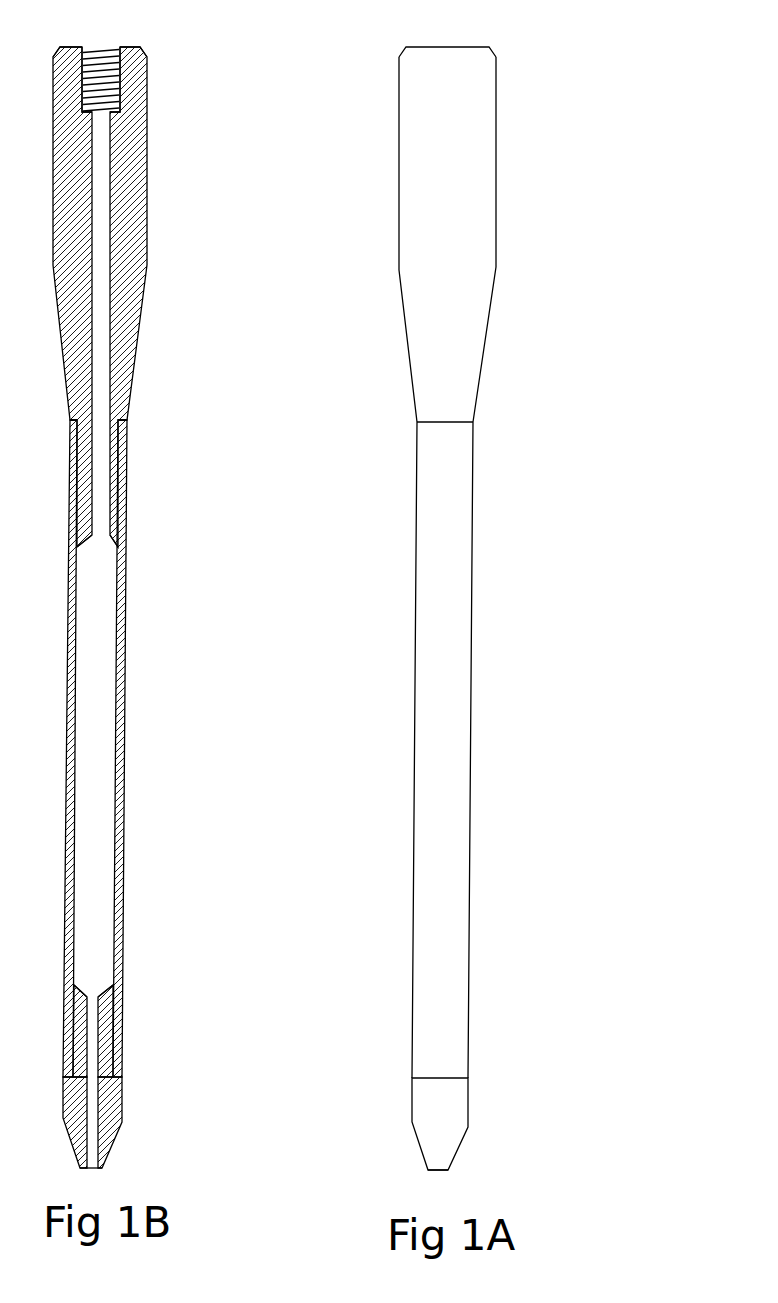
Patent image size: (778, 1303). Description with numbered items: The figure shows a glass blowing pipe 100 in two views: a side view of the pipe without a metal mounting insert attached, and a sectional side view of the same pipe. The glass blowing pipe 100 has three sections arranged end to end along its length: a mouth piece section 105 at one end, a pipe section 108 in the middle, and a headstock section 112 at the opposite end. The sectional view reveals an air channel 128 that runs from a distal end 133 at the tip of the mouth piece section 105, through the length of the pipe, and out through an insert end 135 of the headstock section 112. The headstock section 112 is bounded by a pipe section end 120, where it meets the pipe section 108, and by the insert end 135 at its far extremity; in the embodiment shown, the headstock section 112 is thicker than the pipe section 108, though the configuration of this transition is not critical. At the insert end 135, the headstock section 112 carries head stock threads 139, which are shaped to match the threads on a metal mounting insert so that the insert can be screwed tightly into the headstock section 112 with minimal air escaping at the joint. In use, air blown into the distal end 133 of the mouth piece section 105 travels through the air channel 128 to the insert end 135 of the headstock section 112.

In FIG. 1B, the glass blowing pipe 100 is at (156, 754).
In FIG. 1A, the glass blowing pipe 100 is at (527, 724).
In FIG. 1B, the mouth piece section 105 is at (108, 1103).
In FIG. 1A, the mouth piece section 105 is at (452, 1107).
In FIG. 1B, the pipe section 108 is at (103, 816).
In FIG. 1A, the pipe section 108 is at (455, 847).
In FIG. 1B, the headstock section 112 is at (127, 203).
In FIG. 1A, the headstock section 112 is at (468, 192).
In FIG. 1B, the pipe section end 120 is at (127, 420).
In FIG. 1A, the pipe section end 120 is at (473, 422).
In FIG. 1B, the air channel 128 is at (98, 952).
In FIG. 1B, the distal end 133 is at (101, 1168).
In FIG. 1A, the distal end 133 is at (448, 1170).
In FIG. 1B, the insert end 135 is at (133, 47).
In FIG. 1A, the insert end 135 is at (473, 47).
In FIG. 1B, the head stock threads 139 is at (120, 82).